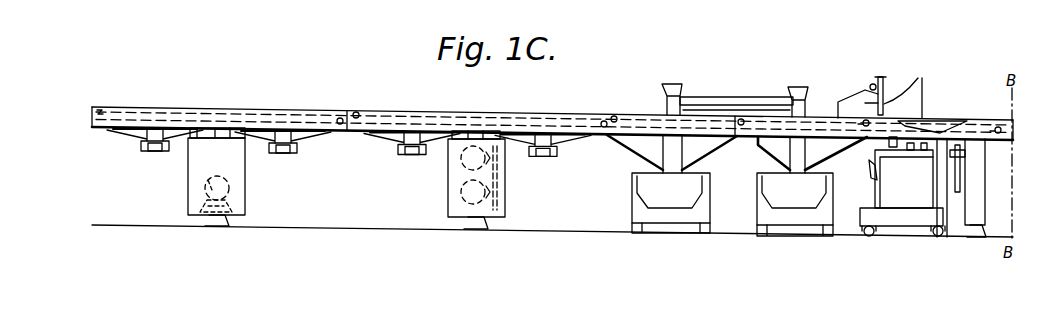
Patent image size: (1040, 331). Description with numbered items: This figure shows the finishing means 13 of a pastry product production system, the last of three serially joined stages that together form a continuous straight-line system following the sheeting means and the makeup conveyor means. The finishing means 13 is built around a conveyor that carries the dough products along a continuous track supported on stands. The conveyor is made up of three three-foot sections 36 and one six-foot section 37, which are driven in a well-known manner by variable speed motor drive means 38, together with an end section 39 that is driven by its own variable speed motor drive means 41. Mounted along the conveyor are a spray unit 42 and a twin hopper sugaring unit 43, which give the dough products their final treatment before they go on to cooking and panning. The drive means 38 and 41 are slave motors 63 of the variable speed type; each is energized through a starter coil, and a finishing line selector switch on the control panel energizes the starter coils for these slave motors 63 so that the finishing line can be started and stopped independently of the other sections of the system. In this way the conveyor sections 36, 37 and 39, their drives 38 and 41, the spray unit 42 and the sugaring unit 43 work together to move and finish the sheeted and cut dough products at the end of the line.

The finishing means 13 is at (551, 113).
The 3-foot sections 36 is at (634, 122).
The 6-foot section 37 is at (435, 115).
The variable speed motor drive means 38 is at (455, 187).
The end section 39 is at (218, 113).
The variable speed motor drive means 41 is at (197, 169).
The spray unit 42 is at (902, 149).
The twin hopper sugaring unit 43 is at (731, 98).
The slave motors 63 is at (205, 190).